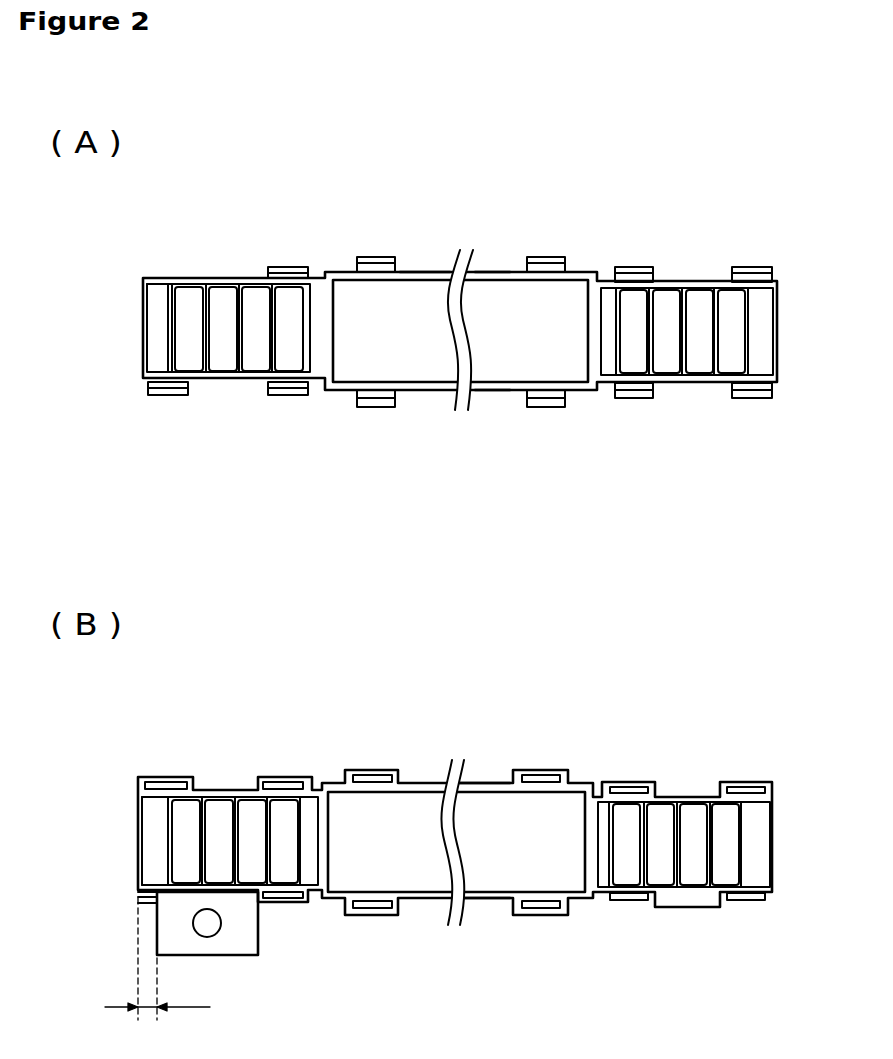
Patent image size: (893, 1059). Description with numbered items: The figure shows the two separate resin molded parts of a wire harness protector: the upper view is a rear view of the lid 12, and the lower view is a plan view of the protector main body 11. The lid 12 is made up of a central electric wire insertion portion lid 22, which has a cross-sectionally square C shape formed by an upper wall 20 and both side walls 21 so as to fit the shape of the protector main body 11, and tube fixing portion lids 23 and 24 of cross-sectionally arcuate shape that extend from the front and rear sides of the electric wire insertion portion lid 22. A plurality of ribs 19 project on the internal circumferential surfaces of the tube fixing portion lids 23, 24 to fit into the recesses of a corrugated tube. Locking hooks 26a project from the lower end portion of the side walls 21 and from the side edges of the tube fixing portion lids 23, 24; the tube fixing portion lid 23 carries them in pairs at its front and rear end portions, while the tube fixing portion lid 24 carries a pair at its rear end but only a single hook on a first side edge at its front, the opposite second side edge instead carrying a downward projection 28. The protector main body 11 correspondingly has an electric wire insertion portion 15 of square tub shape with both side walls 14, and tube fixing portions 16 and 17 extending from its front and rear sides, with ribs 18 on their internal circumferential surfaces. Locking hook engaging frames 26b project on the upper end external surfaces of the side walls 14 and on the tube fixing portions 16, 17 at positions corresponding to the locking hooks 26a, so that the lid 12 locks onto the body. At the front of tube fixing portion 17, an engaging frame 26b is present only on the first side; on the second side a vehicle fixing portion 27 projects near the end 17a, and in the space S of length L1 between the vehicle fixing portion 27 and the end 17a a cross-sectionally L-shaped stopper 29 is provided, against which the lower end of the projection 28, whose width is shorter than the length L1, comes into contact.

In FIG. 2B, the protector main body 11 is at (331, 762).
In FIG. 2A, the lid 12 is at (338, 256).
In FIG. 2B, the side walls 14 is at (485, 783).
In FIG. 2B, the electric wire insertion portion 15 is at (423, 792).
In FIG. 2B, the tube fixing portion 16 is at (685, 892).
In FIG. 2B, the tube fixing portion 17 is at (218, 790).
In FIG. 2B, the end 17a is at (138, 850).
In FIG. 2B, the ribs 18 is at (167, 825).
In FIG. 2A, the ribs 19 is at (168, 328).
In FIG. 2A, the upper wall 20 is at (577, 307).
In FIG. 2A, the side walls 21 is at (495, 272).
In FIG. 2A, the electric wire insertion portion lid 22 is at (433, 272).
In FIG. 2A, the tube fixing portion lid 23 is at (683, 387).
In FIG. 2A, the tube fixing portion lid 24 is at (217, 382).
In FIG. 2A, the locking hooks 26a is at (284, 267).
In FIG. 2B, the locking hook engaging frames 26b is at (158, 777).
In FIG. 2B, the vehicle fixing portion 27 is at (233, 955).
In FIG. 2A, the projection 28 is at (153, 278).
In FIG. 2B, the stopper 29 is at (137, 899).
In FIG. 2B, the space S is at (150, 967).
In FIG. 2B, the length L1 is at (157, 1016).